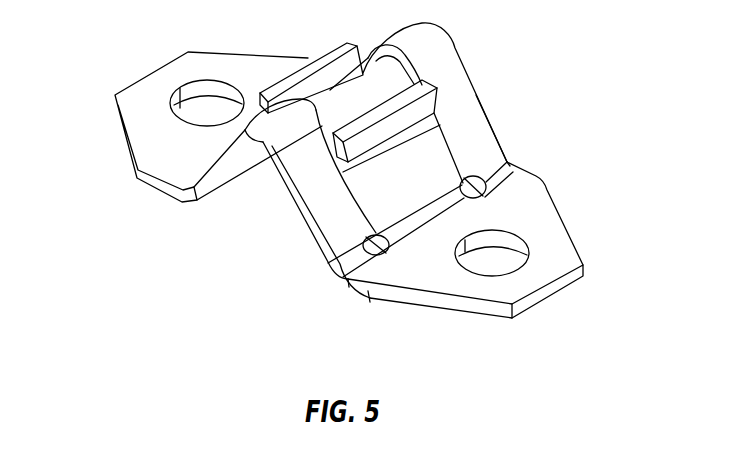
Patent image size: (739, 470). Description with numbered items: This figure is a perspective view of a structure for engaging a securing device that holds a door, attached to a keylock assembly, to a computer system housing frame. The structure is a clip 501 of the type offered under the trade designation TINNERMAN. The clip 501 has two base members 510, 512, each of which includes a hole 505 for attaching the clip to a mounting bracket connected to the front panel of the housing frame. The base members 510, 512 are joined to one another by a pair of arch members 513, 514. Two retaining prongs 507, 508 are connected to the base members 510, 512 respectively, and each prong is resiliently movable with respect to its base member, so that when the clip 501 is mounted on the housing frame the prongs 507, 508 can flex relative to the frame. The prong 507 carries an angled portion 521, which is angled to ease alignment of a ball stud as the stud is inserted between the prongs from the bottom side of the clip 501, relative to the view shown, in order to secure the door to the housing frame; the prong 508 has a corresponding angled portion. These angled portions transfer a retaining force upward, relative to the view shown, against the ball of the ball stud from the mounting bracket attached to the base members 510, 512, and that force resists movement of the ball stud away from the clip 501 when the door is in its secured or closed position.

The clip 501 is at (485, 83).
The hole 505 is at (510, 257).
The retaining prong 507 is at (420, 118).
The retaining prong 508 is at (328, 72).
The base member 510 is at (408, 280).
The base member 512 is at (148, 182).
The arch member 513 is at (287, 200).
The arch member 514 is at (497, 131).
The angled portion 521 is at (430, 185).